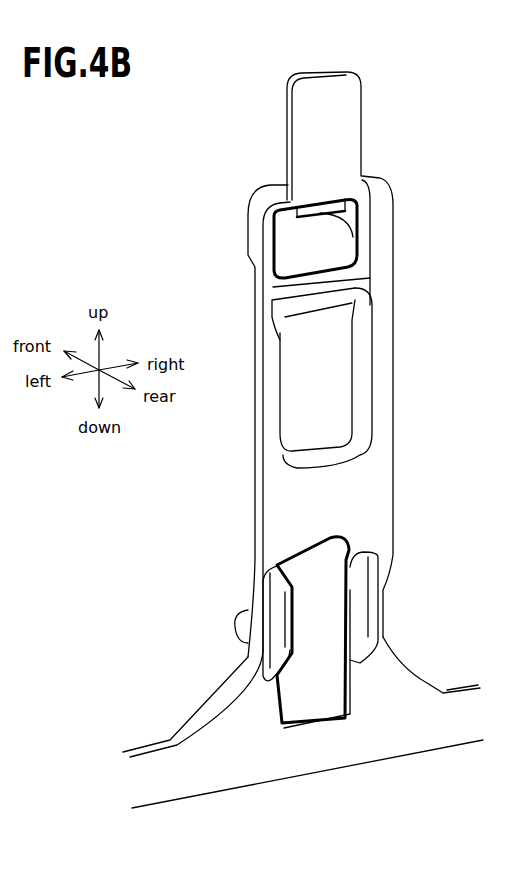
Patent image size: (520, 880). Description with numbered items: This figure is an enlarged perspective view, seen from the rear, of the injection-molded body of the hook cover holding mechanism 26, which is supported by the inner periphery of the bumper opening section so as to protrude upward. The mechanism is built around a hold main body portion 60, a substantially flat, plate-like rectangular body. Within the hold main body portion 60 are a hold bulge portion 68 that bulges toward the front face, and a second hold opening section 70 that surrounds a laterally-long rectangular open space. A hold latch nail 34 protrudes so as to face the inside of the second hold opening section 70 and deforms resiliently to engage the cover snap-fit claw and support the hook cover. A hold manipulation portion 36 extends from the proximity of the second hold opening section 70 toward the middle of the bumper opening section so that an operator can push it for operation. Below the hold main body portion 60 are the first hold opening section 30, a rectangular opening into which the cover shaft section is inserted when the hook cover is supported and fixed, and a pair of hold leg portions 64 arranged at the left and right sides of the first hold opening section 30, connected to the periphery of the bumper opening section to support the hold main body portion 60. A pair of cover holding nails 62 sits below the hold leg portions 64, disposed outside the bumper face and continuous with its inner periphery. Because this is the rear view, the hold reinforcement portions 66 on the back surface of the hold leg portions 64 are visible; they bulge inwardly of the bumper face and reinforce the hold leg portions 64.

The hook cover holding mechanism 26 is at (434, 167).
The first hold opening section 30 is at (282, 692).
The hold latch nail 34 is at (360, 237).
The hold manipulation portion 36 is at (284, 138).
The hold main body portion 60 is at (414, 487).
The cover holding nails 62 is at (235, 618).
The hold leg portions 64 is at (247, 593).
The hold reinforcement portions 66 is at (288, 623).
The hold bulge portion 68 is at (328, 393).
The second hold opening section 70 is at (313, 249).